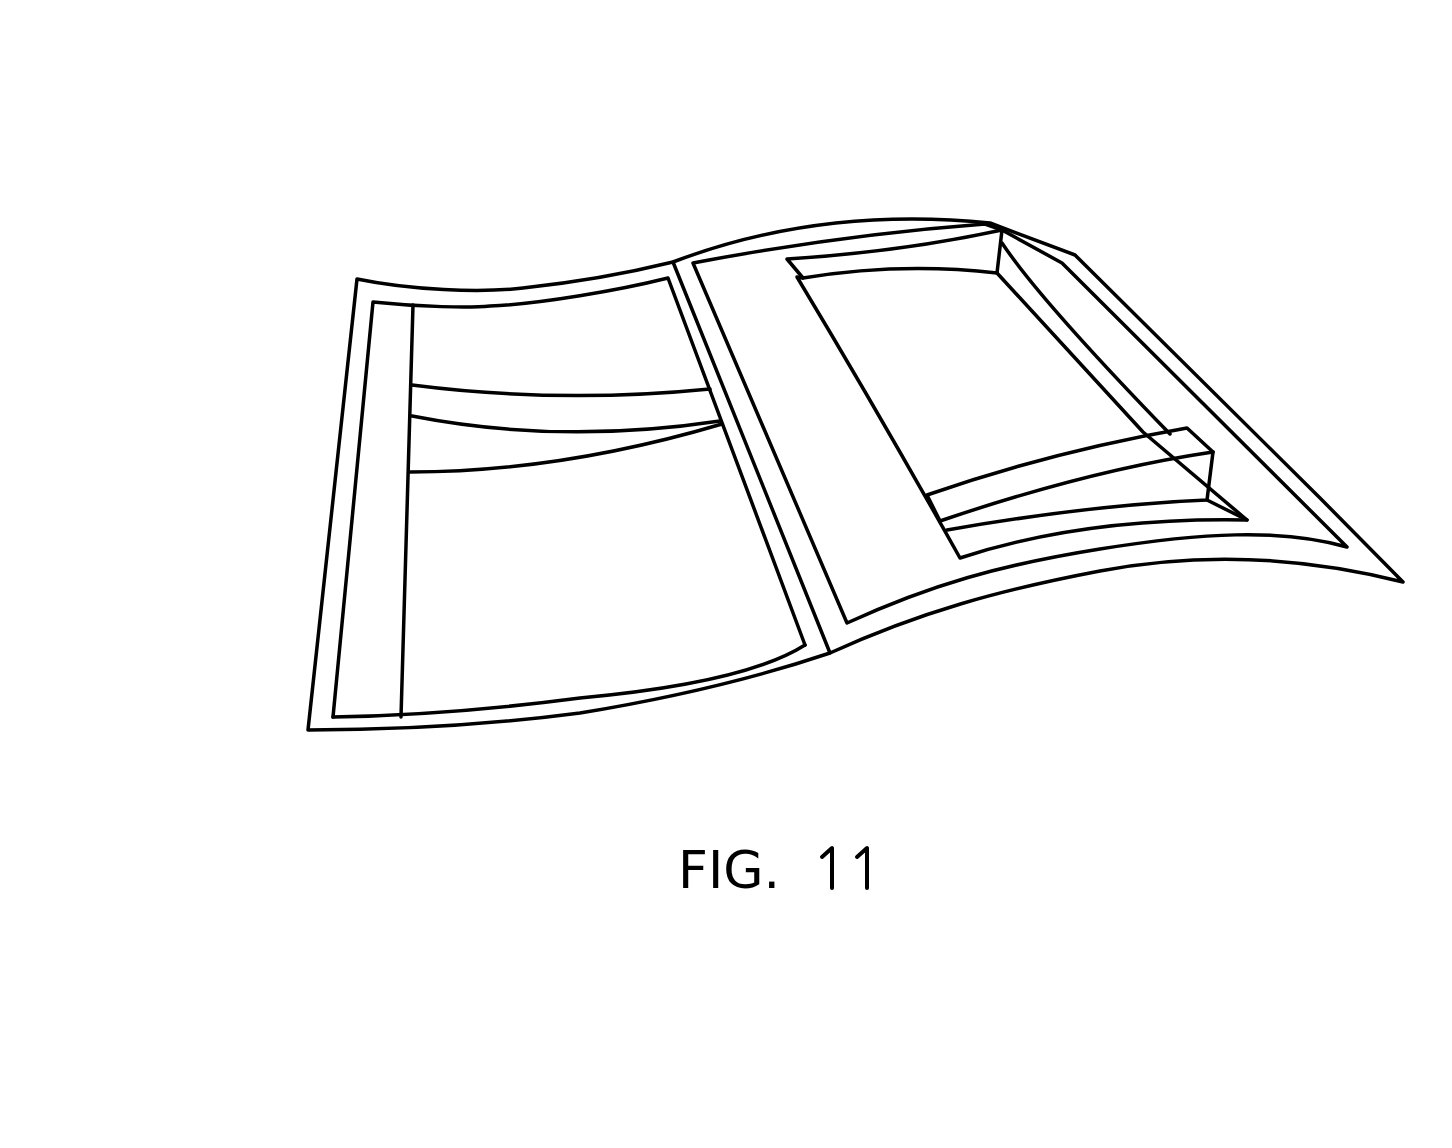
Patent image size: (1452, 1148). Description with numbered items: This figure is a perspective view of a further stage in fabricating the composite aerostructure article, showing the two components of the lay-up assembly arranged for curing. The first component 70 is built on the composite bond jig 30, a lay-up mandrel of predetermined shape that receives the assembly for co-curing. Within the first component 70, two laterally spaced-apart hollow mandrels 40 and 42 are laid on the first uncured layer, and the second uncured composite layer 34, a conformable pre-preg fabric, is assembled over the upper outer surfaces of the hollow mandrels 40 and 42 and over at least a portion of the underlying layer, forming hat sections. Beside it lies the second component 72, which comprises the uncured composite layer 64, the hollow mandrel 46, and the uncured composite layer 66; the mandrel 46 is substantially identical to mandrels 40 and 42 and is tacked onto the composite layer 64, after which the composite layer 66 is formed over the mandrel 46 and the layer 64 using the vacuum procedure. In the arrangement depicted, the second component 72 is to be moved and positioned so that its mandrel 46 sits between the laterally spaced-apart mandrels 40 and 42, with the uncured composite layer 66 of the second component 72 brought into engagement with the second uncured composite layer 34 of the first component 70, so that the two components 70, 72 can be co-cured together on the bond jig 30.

The composite bond jig 30 is at (1190, 537).
The second uncured composite layer 34 is at (943, 523).
The hollow mandrel 40 is at (983, 228).
The hollow mandrel 42 is at (1167, 440).
The hollow mandrel 46 is at (442, 400).
The uncured composite layer 64 is at (355, 697).
The uncured composite layer 66 is at (578, 687).
The first component 70 is at (859, 215).
The second component 72 is at (504, 280).